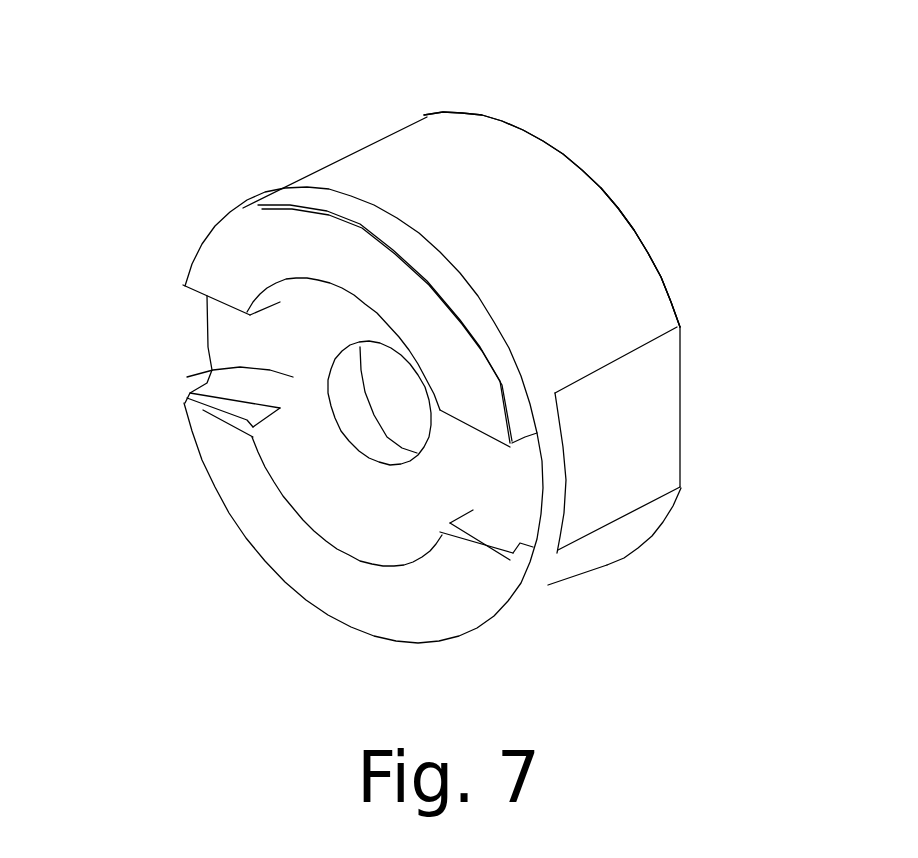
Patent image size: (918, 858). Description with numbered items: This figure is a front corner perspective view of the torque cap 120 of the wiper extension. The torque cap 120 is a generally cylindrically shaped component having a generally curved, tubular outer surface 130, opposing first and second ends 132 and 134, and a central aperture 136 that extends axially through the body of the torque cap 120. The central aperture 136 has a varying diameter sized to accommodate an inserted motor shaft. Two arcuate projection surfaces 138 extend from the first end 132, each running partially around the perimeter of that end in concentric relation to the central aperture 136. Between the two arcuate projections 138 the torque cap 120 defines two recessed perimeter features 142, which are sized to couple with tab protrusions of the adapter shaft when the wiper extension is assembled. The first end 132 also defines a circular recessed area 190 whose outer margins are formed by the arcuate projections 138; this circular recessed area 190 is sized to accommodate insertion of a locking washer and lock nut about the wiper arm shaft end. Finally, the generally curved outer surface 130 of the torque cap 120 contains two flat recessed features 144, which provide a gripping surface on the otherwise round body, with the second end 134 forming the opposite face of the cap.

The torque cap 120 is at (427, 145).
The outer surface 130 is at (508, 175).
The first end 132 is at (292, 631).
The second end 134 is at (667, 183).
The central aperture 136 is at (357, 347).
The arcuate projection surfaces 138 is at (452, 358).
The recessed perimeter features 142 is at (210, 342).
The flat recessed features 144 is at (645, 406).
The circular recessed area 190 is at (213, 372).